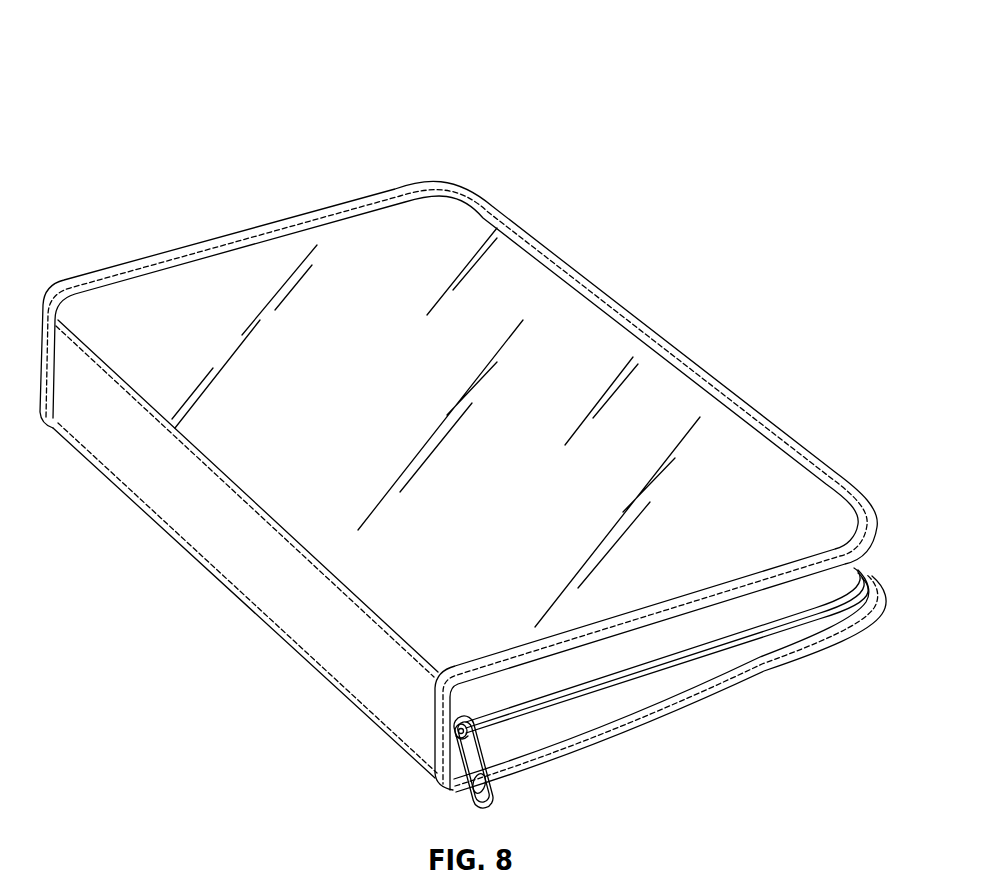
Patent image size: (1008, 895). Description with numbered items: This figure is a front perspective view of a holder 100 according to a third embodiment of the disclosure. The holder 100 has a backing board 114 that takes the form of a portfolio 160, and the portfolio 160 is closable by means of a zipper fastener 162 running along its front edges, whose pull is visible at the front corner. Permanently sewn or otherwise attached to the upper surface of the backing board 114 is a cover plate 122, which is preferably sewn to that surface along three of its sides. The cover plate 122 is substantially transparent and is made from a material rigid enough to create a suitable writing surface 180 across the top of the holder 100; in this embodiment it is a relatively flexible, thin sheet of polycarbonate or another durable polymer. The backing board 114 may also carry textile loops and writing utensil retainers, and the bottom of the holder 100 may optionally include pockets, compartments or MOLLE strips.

The holder 100 is at (537, 80).
The cover plate 122 is at (150, 306).
The writing surface 180 is at (433, 379).
The backing board 114 is at (293, 614).
The portfolio 160 is at (817, 640).
The zipper fastener 162 is at (468, 756).